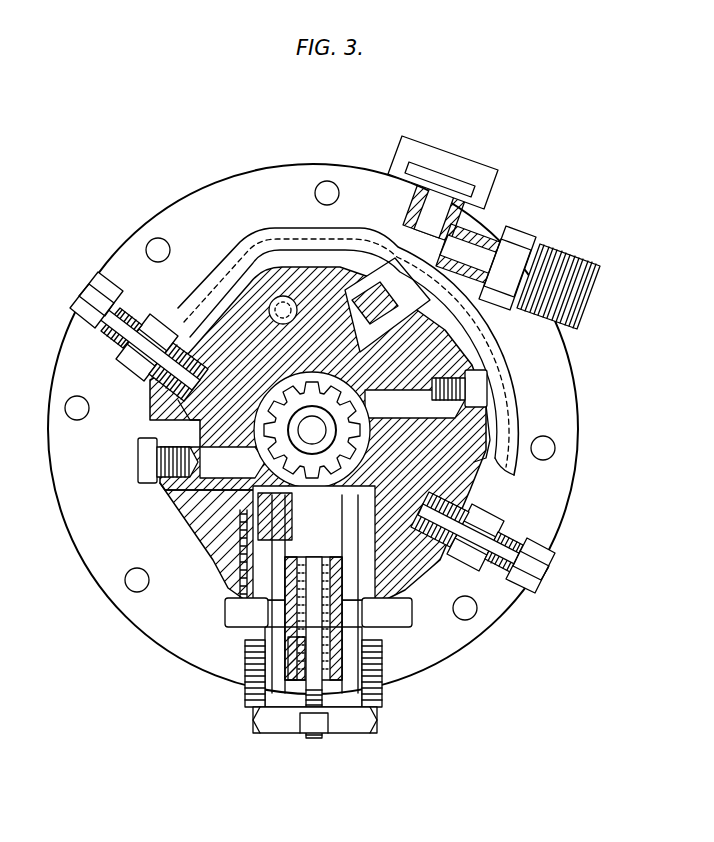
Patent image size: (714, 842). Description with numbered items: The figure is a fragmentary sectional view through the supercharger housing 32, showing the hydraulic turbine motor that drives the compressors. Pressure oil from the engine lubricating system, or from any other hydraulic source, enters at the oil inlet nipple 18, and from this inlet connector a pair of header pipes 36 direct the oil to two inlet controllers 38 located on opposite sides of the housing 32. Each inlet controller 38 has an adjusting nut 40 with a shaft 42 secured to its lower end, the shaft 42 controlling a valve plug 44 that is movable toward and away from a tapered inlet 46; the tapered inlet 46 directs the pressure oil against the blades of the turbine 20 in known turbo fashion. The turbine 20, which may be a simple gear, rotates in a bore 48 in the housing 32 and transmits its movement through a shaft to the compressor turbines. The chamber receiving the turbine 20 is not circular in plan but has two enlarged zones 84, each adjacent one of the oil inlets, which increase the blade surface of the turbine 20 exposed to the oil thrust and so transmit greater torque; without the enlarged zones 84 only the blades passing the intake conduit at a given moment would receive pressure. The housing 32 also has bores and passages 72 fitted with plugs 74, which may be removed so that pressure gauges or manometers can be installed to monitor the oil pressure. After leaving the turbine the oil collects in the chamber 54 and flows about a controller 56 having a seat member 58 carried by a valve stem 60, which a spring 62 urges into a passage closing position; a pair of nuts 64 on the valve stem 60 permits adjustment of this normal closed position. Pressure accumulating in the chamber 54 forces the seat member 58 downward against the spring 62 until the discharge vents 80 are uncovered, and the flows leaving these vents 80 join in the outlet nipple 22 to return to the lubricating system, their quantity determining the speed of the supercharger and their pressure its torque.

The oil inlet nipple 18 is at (558, 248).
The hydraulic turbine 20 is at (414, 388).
The outlet nipple 22 is at (382, 703).
The housing 32 is at (332, 299).
The header pipes 36 is at (262, 232).
The inlet controllers 38 is at (137, 395).
The adjusting nut 40 is at (76, 305).
The shaft 42 is at (497, 484).
The valve plug 44 is at (220, 433).
The tapered inlet 46 is at (243, 482).
The bore 48 is at (297, 375).
The chamber 54 is at (300, 584).
The controller 56 is at (253, 626).
The seat member 58 is at (410, 590).
The valve stem 60 is at (312, 687).
The spring 62 is at (290, 640).
The nuts 64 is at (325, 733).
The bores and passages 72 is at (494, 418).
The plugs 74 is at (147, 487).
The discharge vents 80 is at (287, 557).
The enlarged zones 84 is at (313, 367).